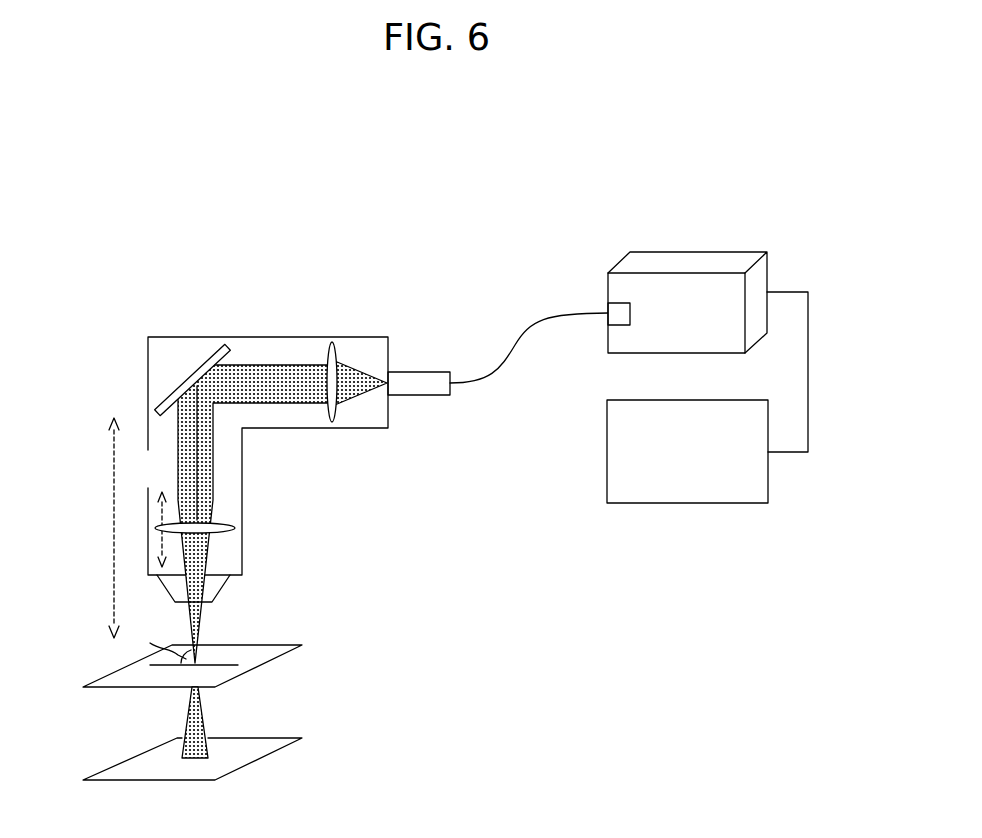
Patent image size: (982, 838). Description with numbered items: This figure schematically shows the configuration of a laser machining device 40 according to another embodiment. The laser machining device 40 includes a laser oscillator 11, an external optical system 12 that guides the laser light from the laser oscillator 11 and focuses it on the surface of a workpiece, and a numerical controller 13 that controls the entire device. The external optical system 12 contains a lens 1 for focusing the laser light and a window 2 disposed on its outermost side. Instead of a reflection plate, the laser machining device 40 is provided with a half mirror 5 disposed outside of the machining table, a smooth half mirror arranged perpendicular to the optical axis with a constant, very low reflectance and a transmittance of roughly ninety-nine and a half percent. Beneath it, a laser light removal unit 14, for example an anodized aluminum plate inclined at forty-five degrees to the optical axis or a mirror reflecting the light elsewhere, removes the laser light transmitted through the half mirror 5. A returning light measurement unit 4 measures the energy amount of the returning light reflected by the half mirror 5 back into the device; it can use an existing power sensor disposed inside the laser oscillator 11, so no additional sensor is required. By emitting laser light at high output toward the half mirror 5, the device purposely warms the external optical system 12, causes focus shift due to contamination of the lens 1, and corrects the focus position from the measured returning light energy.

The laser machining device 40 is at (136, 238).
The external optical system 12 is at (147, 353).
The lens 1 is at (222, 526).
The window 2 is at (208, 612).
The returning light measurement unit 4 is at (616, 303).
The laser oscillator 11 is at (720, 250).
The numerical controller 13 is at (640, 504).
The half mirror 5 is at (255, 650).
The laser light removal unit 14 is at (255, 745).